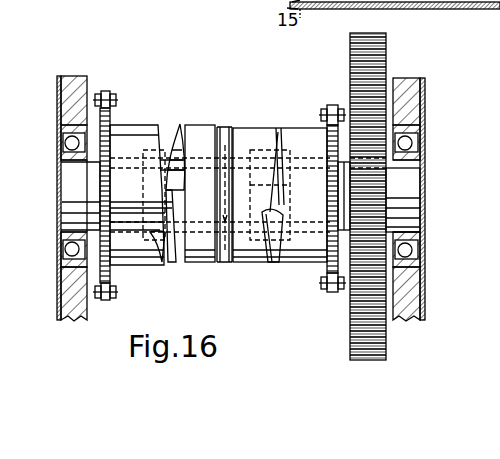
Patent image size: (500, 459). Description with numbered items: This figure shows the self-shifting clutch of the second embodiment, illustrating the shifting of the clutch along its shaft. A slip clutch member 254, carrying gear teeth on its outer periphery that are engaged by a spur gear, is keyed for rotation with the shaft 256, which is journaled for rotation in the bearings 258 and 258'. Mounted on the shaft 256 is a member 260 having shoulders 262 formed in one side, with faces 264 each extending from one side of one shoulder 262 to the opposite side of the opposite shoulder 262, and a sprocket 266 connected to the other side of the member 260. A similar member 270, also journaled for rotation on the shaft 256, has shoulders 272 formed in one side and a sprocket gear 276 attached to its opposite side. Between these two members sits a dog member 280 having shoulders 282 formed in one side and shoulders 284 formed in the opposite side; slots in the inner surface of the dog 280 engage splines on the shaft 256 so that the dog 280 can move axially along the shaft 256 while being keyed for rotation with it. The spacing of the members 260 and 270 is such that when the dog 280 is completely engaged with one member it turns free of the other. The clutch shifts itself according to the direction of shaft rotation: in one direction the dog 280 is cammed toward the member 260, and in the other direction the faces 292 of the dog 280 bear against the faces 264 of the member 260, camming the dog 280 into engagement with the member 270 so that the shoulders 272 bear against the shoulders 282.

The slip clutch member 254 is at (386, 70).
The shaft 256 is at (418, 189).
The bearing 258 is at (429, 199).
The bearing 258' is at (47, 198).
The member 260 is at (124, 125).
The shoulders 262 is at (155, 200).
The faces 264 is at (155, 254).
The sprocket 266 is at (114, 91).
The member 270 is at (290, 128).
The shoulders 272 is at (280, 261).
The sprocket gear 276 is at (329, 106).
The dog member 280 is at (198, 125).
The shoulders 282 is at (264, 187).
The shoulders 284 is at (176, 242).
The faces 292 is at (176, 128).